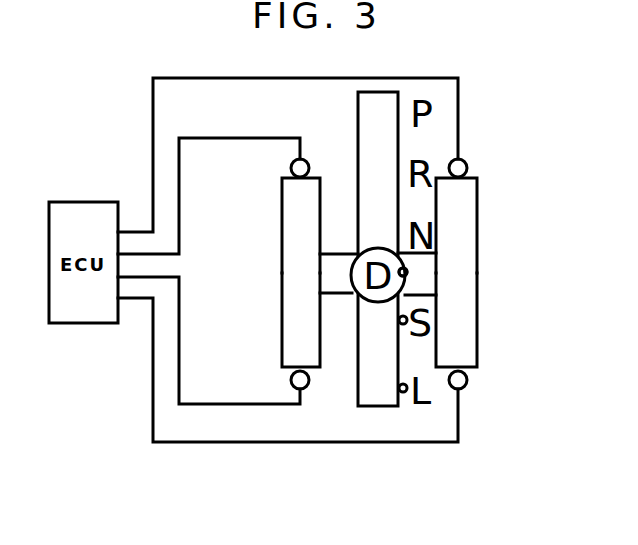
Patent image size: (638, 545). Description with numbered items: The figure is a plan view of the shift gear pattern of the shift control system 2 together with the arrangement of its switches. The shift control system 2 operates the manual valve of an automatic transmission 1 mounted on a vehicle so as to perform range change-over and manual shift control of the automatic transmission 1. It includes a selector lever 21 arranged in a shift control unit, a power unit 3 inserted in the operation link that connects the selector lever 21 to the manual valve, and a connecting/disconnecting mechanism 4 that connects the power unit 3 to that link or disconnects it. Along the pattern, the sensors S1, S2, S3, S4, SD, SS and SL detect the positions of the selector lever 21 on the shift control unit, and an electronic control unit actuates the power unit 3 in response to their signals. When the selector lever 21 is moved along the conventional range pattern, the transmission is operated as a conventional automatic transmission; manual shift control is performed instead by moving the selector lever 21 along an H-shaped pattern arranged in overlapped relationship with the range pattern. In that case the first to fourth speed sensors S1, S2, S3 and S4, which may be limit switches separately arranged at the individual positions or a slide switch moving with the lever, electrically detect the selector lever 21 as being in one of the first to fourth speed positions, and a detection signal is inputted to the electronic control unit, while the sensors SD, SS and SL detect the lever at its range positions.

The automatic transmission 1 is at (284, 225).
The shift control system 2 is at (281, 324).
The power unit 3 is at (476, 225).
The connecting/disconnecting mechanism 4 is at (476, 323).
The selector lever 21 is at (407, 272).
The 1st speed sensor S1 is at (306, 161).
The 2nd speed sensor S2 is at (306, 386).
The 3rd speed sensor S3 is at (467, 168).
The 4th speed sensor S4 is at (464, 386).
The sensor SD is at (400, 268).
The S position switch SS is at (399, 321).
The sensor SL is at (399, 388).